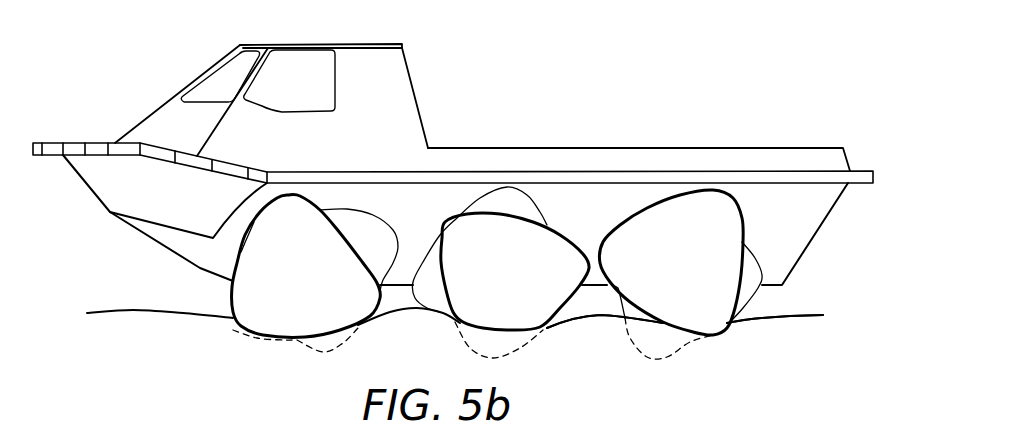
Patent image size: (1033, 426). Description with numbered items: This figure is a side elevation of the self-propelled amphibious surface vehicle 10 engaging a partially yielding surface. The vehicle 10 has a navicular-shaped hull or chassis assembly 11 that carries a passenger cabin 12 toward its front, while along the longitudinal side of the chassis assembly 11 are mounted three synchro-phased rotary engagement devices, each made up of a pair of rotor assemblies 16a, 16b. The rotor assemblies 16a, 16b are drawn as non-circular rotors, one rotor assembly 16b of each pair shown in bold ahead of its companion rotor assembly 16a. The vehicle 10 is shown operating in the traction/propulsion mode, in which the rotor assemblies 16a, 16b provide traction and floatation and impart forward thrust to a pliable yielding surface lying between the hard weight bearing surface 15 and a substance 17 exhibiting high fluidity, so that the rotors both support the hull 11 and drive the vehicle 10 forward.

The self-propelled amphibious surface vehicle 10 is at (449, 156).
The navicular-shaped hull or chassis assembly 11 is at (110, 212).
The passenger cabin 12 is at (417, 98).
The weight bearing surface 15 is at (733, 341).
The substance exhibiting high fluidity 17 is at (685, 321).
The rotor assembly 16a is at (430, 252).
The rotor assembly 16b is at (807, 233).